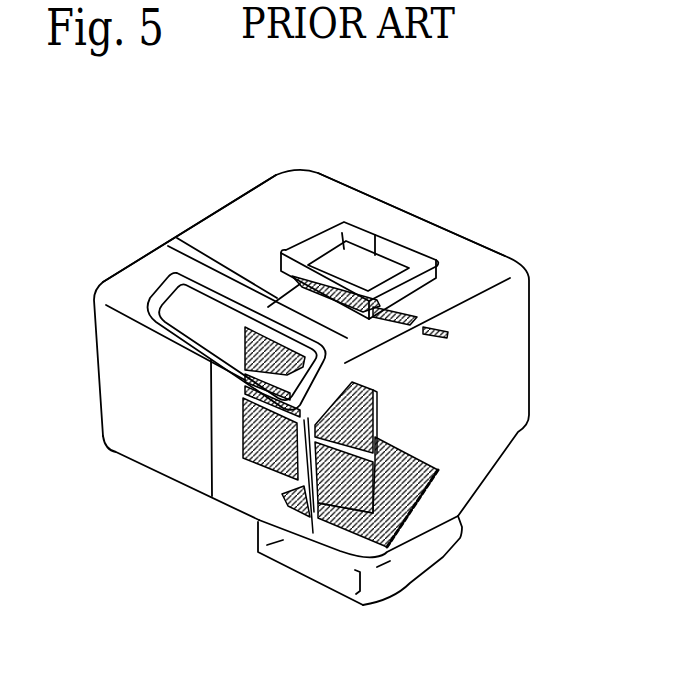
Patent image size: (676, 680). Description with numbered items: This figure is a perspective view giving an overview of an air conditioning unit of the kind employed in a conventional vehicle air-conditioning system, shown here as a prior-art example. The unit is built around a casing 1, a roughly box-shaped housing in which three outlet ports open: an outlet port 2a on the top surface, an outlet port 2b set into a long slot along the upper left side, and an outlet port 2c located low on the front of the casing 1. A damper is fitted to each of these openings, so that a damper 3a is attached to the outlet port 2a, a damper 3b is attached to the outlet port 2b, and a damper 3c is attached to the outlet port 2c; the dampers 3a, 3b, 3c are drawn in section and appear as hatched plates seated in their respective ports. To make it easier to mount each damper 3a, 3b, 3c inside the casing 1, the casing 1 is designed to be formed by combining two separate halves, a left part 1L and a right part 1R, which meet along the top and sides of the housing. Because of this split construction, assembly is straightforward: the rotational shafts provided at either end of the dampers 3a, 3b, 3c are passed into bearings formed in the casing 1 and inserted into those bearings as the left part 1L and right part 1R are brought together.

The casing 1 is at (331, 166).
The left part 1L is at (210, 215).
The right part 1R is at (506, 261).
The outlet port 2a is at (345, 257).
The outlet port 2b is at (197, 309).
The outlet port 2c is at (293, 563).
The damper 3a is at (445, 327).
The damper 3b is at (247, 442).
The damper 3c is at (437, 488).